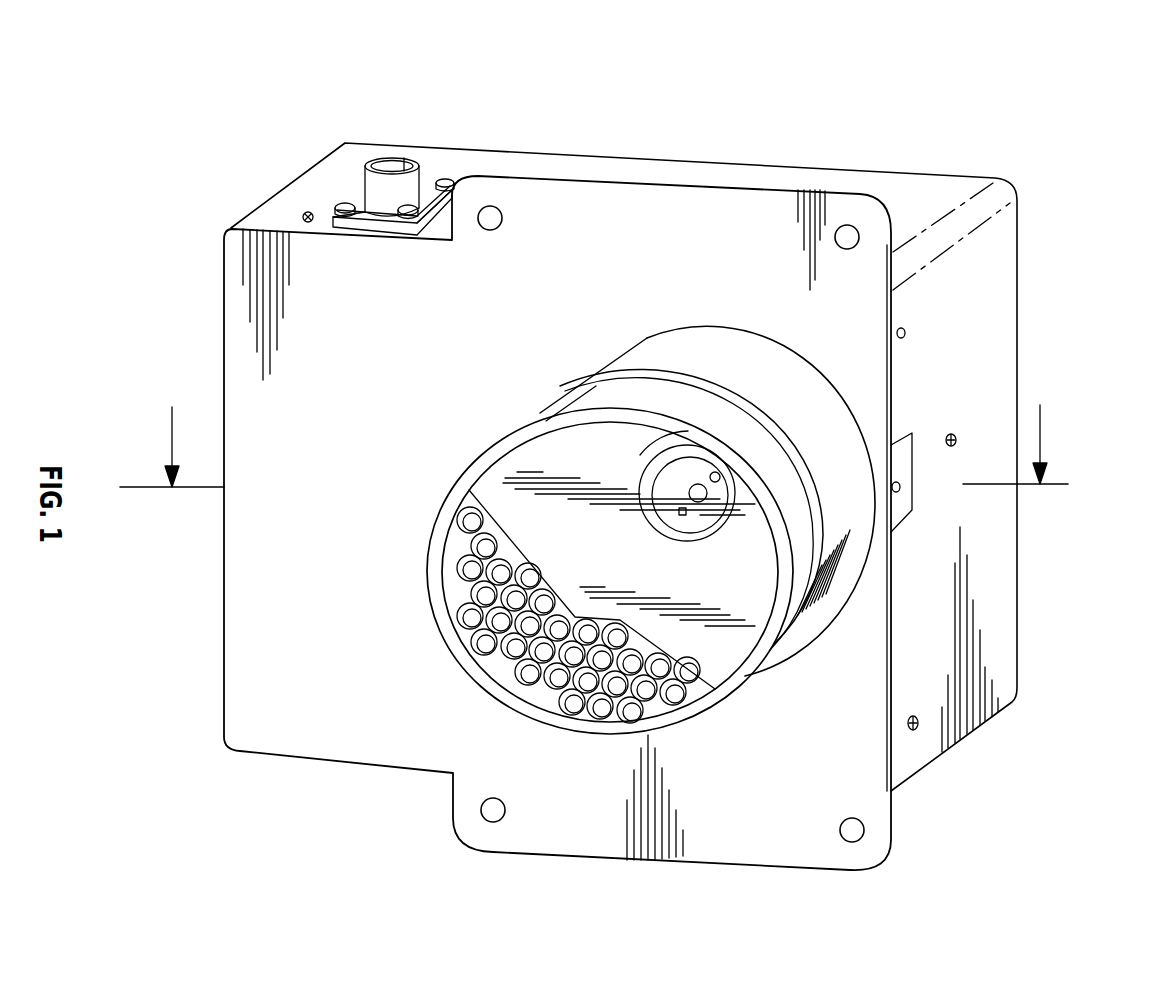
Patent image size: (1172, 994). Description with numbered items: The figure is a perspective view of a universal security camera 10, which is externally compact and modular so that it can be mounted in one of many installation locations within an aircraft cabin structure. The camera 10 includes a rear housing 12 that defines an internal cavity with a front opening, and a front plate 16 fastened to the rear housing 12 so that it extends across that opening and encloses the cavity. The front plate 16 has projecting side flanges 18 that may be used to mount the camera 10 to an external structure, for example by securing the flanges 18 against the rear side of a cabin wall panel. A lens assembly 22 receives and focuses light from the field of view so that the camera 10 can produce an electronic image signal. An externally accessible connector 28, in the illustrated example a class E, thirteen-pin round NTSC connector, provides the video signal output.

The security camera 10 is at (992, 118).
The rear housing 12 is at (988, 303).
The front plate 16 is at (277, 644).
The side flanges 18 is at (733, 225).
The lens assembly 22 is at (818, 618).
The connector 28 is at (367, 183).